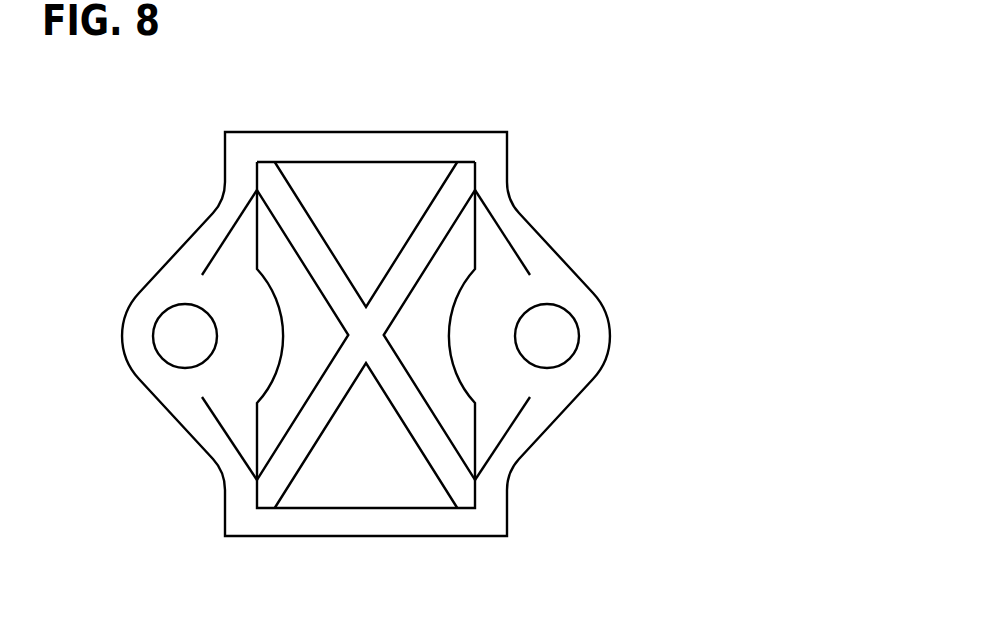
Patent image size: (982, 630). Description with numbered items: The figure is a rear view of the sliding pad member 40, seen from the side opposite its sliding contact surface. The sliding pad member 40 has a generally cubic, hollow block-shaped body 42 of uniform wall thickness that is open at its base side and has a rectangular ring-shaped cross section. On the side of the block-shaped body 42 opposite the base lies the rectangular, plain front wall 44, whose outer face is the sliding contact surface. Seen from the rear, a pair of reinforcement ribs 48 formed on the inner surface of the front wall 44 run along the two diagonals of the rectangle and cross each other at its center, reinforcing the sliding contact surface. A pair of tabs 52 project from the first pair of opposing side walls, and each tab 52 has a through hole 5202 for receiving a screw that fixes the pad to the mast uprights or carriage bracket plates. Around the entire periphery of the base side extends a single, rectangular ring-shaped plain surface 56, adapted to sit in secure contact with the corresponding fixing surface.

The sliding pad member 40 is at (528, 197).
The block-shaped body 42 is at (288, 133).
The front wall 44 is at (402, 483).
The reinforcement ribs 48 is at (428, 415).
The tabs 52 is at (124, 318).
The plain surface 56 is at (455, 147).
The through hole 5202 is at (565, 313).